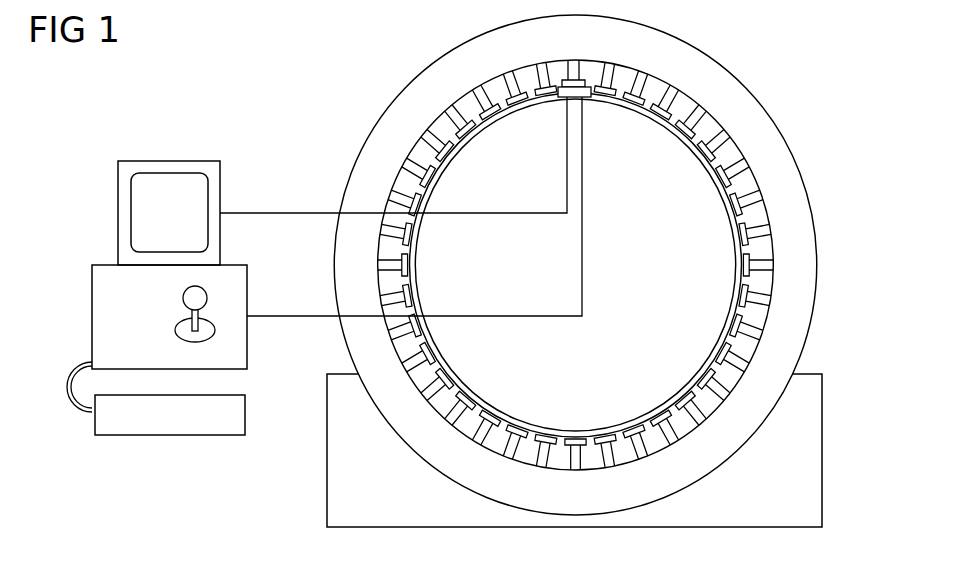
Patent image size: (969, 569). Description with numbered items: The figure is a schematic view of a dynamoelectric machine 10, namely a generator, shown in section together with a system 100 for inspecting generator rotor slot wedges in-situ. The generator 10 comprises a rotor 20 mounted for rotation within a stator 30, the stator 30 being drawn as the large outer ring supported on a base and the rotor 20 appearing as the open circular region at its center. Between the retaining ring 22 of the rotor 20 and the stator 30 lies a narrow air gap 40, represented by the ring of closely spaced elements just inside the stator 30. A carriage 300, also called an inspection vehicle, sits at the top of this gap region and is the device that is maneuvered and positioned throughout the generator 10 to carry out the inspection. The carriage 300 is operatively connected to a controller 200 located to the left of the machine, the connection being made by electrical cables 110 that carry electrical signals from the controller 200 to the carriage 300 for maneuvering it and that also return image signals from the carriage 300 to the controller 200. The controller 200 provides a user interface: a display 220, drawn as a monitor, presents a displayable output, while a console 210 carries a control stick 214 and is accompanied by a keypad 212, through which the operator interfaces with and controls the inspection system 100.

The system for inspecting generator rotor slot wedges in-situ 100 is at (312, 60).
The dynamoelectric machine 10 is at (316, 487).
The stator 30 is at (702, 78).
The air gap 40 is at (727, 192).
The retaining ring 22 is at (740, 262).
The rotor 20 is at (590, 388).
The carriage 300 is at (558, 91).
The electrical cables 110 is at (525, 213).
The controller 200 is at (88, 170).
The display 220 is at (118, 214).
The control console 210 is at (92, 319).
The control stick 214 is at (176, 333).
The keypad 212 is at (170, 436).